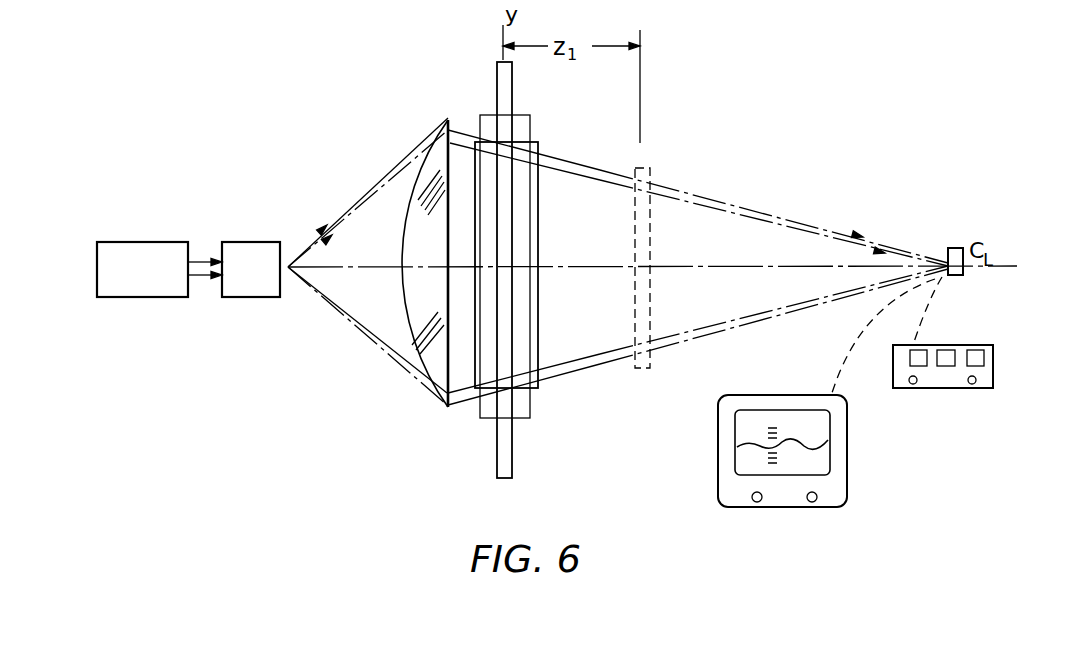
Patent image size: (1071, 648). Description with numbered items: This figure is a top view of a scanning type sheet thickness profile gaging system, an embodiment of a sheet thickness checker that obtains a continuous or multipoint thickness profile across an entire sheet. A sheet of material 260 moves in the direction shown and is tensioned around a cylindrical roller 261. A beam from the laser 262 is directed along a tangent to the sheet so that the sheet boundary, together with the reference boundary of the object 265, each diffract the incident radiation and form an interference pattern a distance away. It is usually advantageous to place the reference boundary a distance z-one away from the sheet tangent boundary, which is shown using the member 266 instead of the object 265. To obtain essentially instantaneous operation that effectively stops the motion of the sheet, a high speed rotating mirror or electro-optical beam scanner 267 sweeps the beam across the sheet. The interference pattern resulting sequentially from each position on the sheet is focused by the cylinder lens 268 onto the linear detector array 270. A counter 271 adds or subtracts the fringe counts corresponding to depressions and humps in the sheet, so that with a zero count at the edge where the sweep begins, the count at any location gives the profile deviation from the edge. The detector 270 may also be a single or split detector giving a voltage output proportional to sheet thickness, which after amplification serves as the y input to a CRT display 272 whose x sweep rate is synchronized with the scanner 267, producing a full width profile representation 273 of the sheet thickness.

The laser 262 is at (142, 269).
The electro-optical beam scanner 267 is at (234, 269).
The cylinder lens 268 is at (447, 405).
The sheet of material 260 is at (538, 390).
The cylindrical roller 261 is at (530, 415).
The object 265 is at (512, 468).
The member 266 is at (636, 246).
The linear detector array 270 is at (957, 277).
The counter 271 is at (941, 389).
The CRT display 272 is at (847, 455).
The full width profile representation 273 is at (822, 424).